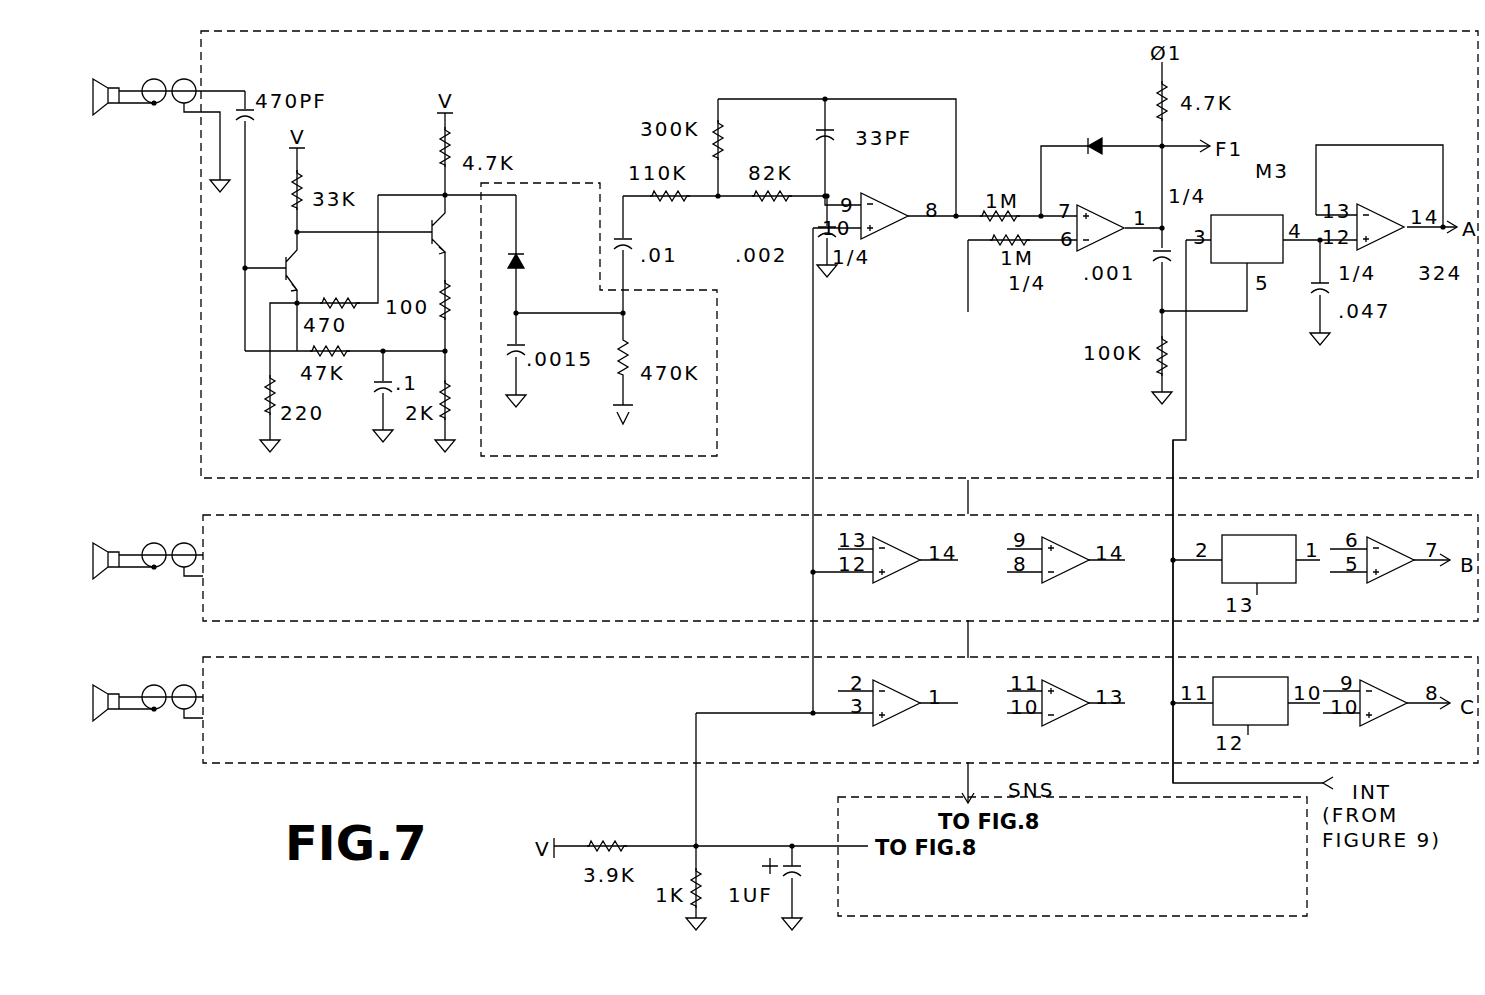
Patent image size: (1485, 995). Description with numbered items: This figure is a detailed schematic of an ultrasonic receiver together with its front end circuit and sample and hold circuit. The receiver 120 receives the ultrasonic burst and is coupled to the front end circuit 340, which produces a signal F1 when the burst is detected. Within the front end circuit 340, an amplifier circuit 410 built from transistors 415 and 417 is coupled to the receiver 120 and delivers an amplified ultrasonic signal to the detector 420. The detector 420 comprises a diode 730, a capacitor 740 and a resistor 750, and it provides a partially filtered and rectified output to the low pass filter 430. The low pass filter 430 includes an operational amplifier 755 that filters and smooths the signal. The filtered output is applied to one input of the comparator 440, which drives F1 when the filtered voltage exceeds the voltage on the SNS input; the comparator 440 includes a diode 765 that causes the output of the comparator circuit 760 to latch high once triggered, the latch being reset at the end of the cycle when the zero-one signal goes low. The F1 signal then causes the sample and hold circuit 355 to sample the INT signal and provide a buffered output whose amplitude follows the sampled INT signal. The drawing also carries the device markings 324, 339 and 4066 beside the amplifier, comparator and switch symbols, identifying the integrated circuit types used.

The receiver 120 is at (168, 135).
The front end circuit 340 is at (839, 254).
The amplifier circuit 410 is at (407, 154).
The transistor 415 is at (317, 267).
The transistor 417 is at (415, 237).
The detector 420 is at (599, 319).
The low pass filter 430 is at (851, 99).
The comparator 440 is at (1134, 105).
The diode 730 is at (541, 254).
The capacitor 740 is at (540, 334).
The resistor 750 is at (651, 357).
The operational amplifier 755 is at (890, 206).
The comparator circuit 760 is at (1108, 217).
The diode 765 is at (1101, 161).
The sample and hold circuit 355 is at (1386, 170).
The quad op-amp 324 is at (934, 257).
The quad comparator 339 is at (1032, 307).
The analog switch 4066 is at (1257, 225).